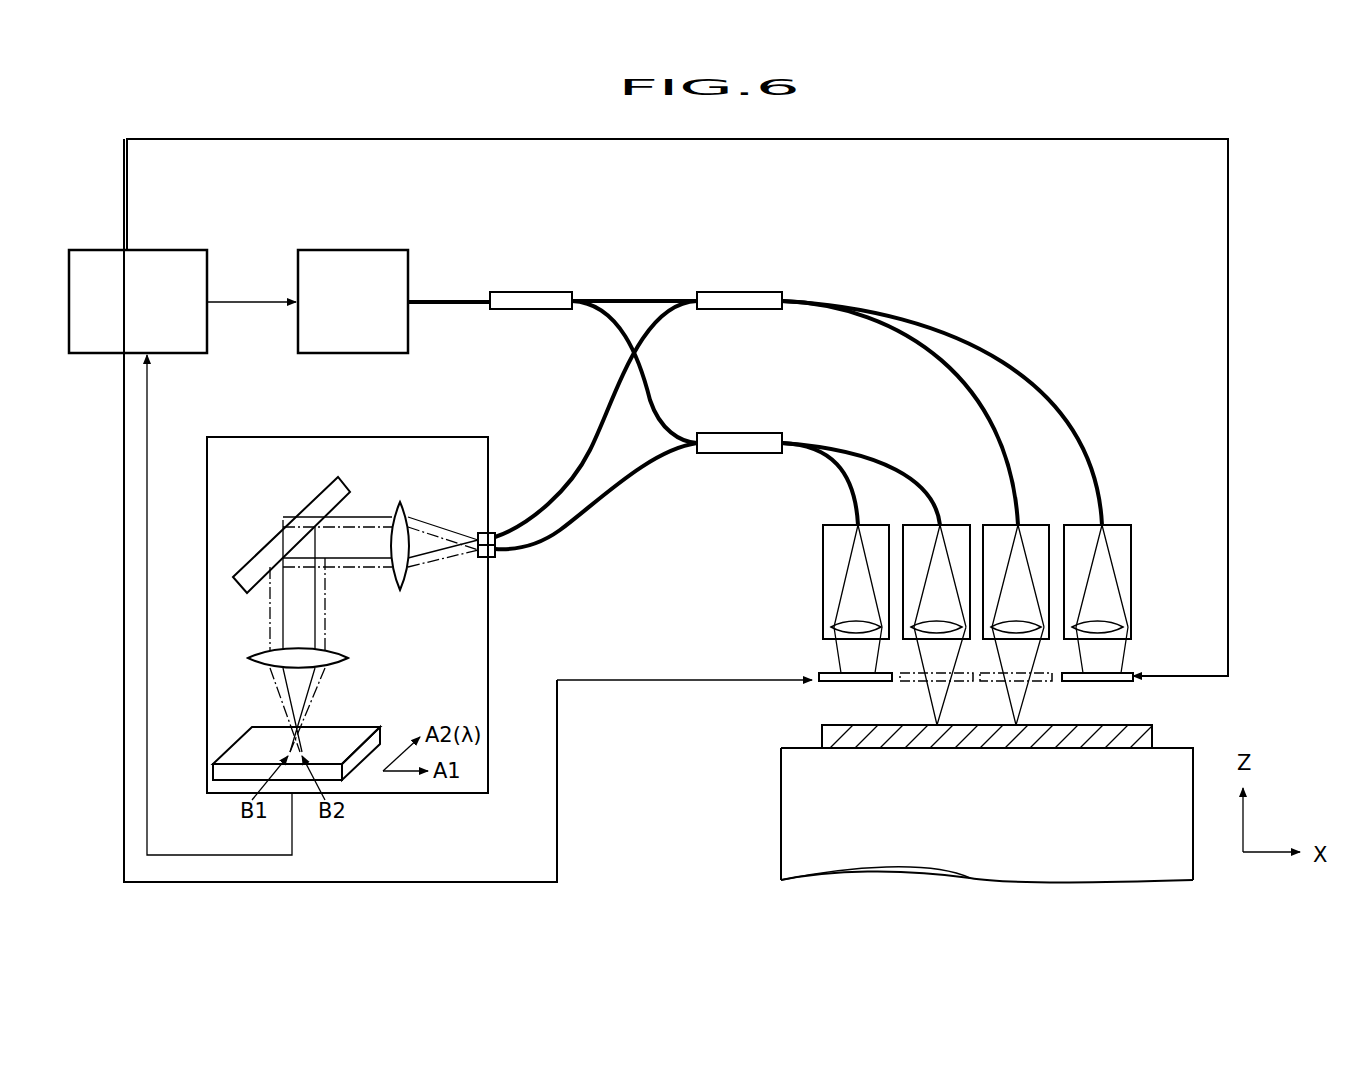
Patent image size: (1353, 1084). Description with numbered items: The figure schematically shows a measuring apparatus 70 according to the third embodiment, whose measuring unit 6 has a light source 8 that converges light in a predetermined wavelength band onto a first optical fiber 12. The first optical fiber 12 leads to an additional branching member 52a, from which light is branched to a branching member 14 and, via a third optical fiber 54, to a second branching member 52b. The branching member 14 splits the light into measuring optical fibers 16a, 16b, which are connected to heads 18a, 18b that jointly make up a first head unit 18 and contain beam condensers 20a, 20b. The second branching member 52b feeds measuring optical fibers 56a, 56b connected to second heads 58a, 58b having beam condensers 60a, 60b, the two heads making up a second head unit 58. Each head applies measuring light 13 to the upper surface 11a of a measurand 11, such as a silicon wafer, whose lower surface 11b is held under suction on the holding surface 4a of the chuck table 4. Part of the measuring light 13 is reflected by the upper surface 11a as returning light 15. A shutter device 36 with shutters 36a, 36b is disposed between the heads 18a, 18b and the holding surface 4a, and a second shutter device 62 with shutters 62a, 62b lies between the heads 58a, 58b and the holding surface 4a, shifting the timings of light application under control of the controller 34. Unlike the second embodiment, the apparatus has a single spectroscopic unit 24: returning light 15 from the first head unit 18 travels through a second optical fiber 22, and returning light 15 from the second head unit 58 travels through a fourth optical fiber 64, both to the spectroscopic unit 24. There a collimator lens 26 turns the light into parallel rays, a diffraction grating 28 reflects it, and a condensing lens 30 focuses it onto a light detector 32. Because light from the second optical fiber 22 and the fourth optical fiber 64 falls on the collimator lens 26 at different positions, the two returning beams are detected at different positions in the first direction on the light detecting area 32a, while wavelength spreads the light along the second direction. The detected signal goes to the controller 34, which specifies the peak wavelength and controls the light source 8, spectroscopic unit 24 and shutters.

The measuring apparatus 70 is at (1247, 183).
The controller 34 is at (147, 250).
The light source 8 is at (345, 250).
The first optical fiber 12 is at (445, 297).
The additional branching member 52a is at (528, 292).
The branching member 14 is at (735, 292).
The third optical fiber 54 is at (640, 378).
The second branching member 52b is at (730, 433).
The measuring optical fiber 16a is at (895, 332).
The measuring optical fiber 16b is at (1003, 360).
The measuring optical fiber 56a is at (828, 460).
The measuring optical fiber 56b is at (893, 472).
The second optical fiber 22 is at (548, 492).
The fourth optical fiber 64 is at (612, 488).
The returning light 15 is at (585, 408).
The measuring light 13 is at (840, 662).
The spectroscopic unit 24 is at (490, 652).
The diffraction grating 28 is at (290, 527).
The collimator lens 26 is at (403, 505).
The condensing lens 30 is at (348, 655).
The light detector 32 is at (352, 762).
The light detecting area 32a is at (345, 737).
The second head unit 58 is at (864, 556).
The second head 58a is at (827, 558).
The second head 58b is at (877, 558).
The beam condenser 60a is at (830, 627).
The beam condenser 60b is at (912, 627).
The first head unit 18 is at (1092, 546).
The head 18a is at (1084, 558).
The head 18b is at (1127, 558).
The beam condenser 20a is at (1040, 627).
The beam condenser 20b is at (1124, 627).
The second shutter device 62 is at (548, 510).
The shutter 62a is at (840, 682).
The shutter 62b is at (915, 682).
The shutter device 36 is at (1118, 695).
The shutter 36a is at (1030, 682).
The shutter 36b is at (1098, 682).
The holding surface 4 is at (980, 836).
The holding surface 4a is at (1135, 744).
The measurand 11 is at (928, 765).
The upper surface 11a is at (840, 725).
The lower surface 11b is at (853, 750).
The measuring unit 6 is at (276, 897).